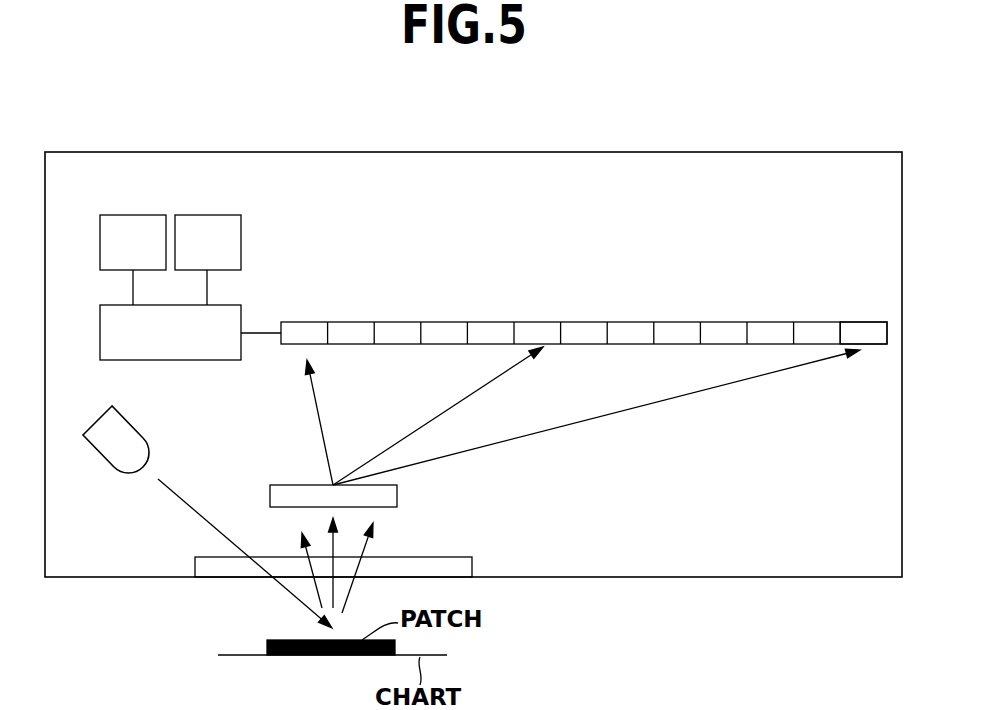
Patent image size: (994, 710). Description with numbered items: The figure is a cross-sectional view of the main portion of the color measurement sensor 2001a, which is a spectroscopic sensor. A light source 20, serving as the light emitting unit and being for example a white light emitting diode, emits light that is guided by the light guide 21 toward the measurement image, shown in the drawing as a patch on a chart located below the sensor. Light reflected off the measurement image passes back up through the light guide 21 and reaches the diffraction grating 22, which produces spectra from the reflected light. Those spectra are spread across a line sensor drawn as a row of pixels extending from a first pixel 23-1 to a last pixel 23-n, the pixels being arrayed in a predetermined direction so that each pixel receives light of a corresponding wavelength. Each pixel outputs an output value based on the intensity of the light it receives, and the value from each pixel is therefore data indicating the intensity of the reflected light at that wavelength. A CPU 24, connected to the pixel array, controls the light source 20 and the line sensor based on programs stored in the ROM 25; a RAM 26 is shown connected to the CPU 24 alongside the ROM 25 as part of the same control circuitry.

The color measurement sensor 2001a is at (648, 152).
The light source 20 is at (95, 455).
The light guide 21 is at (475, 557).
The diffraction grating 22 is at (400, 495).
The line sensor pixel 23-1 is at (305, 322).
The line sensor pixel 23-n is at (864, 322).
The CPU 24 is at (180, 361).
The ROM 25 is at (137, 215).
The RAM 26 is at (206, 215).